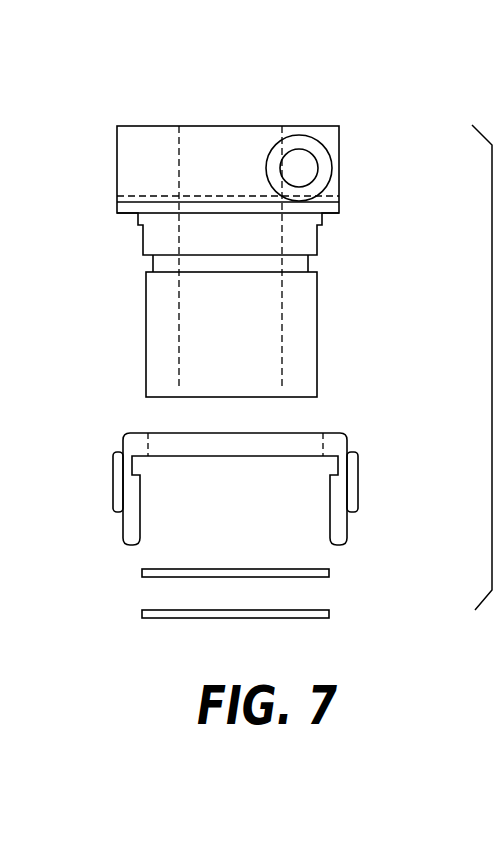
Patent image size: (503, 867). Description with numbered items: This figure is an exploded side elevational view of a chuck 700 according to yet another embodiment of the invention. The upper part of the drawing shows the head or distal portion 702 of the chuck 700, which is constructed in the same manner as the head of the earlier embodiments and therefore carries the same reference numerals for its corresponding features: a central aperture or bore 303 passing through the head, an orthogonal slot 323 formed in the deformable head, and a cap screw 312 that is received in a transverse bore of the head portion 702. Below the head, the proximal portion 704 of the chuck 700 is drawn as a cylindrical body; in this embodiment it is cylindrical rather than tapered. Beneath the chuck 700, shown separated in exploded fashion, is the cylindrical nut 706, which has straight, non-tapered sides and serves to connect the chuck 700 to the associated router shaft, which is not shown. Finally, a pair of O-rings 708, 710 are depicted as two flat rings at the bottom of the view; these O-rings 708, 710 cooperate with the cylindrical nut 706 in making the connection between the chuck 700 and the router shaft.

The chuck 700 is at (355, 163).
The orthogonal slot 323 is at (150, 194).
The head or distal portion 702 is at (118, 188).
The cap screw 312 is at (325, 197).
The central aperture or bore 303 is at (282, 284).
The proximal portion 704 is at (306, 350).
The cylindrical nut 706 is at (343, 445).
The O-ring 708 is at (330, 573).
The O-ring 710 is at (330, 616).